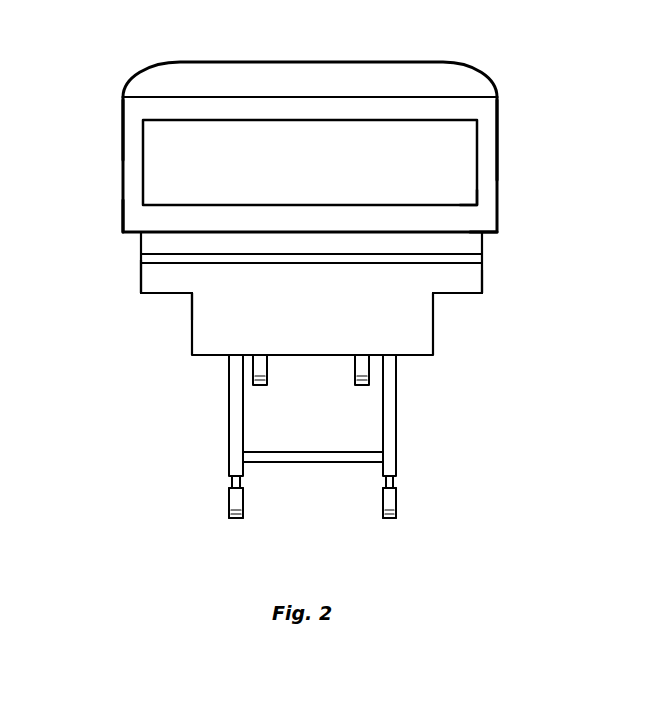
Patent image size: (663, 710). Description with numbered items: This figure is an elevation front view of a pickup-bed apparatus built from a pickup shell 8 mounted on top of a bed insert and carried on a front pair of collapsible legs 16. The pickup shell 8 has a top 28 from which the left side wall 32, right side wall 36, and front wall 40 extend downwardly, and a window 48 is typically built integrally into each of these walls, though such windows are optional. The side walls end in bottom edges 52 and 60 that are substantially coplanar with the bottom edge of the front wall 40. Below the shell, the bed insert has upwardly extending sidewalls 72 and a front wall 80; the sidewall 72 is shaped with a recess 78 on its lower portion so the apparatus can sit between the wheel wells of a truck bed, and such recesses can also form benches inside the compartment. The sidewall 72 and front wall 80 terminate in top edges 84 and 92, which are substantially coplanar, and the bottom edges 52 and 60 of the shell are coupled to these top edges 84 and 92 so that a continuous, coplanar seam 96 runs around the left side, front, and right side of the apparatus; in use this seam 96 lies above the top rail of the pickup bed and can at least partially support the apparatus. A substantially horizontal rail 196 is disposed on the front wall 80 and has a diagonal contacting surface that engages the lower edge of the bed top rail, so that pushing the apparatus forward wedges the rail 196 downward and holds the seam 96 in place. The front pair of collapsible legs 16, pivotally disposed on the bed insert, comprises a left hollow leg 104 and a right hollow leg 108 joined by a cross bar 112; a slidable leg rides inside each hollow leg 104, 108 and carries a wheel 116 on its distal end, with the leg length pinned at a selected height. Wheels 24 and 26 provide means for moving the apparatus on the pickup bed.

The pickup shell 8 is at (497, 97).
The front pair of collapsible legs 16 is at (418, 449).
The wheel 24 is at (356, 385).
The wheel 26 is at (192, 320).
The top 28 is at (334, 62).
The left side wall 32 is at (497, 170).
The right side wall 36 is at (123, 122).
The front wall 40 is at (128, 163).
The window 48 is at (318, 175).
The bottom edge 52 is at (497, 231).
The bottom edge 60 is at (123, 228).
The sidewall 72 is at (482, 295).
The recess 78 is at (183, 287).
The front wall 80 is at (210, 343).
The top edge 84 is at (486, 236).
The top edge 92 is at (140, 240).
The seam 96 is at (476, 207).
The left hollow leg 104 is at (397, 468).
The right hollow leg 108 is at (230, 462).
The cross bar 112 is at (256, 465).
The wheel 116 is at (234, 518).
The horizontal rail 196 is at (310, 266).